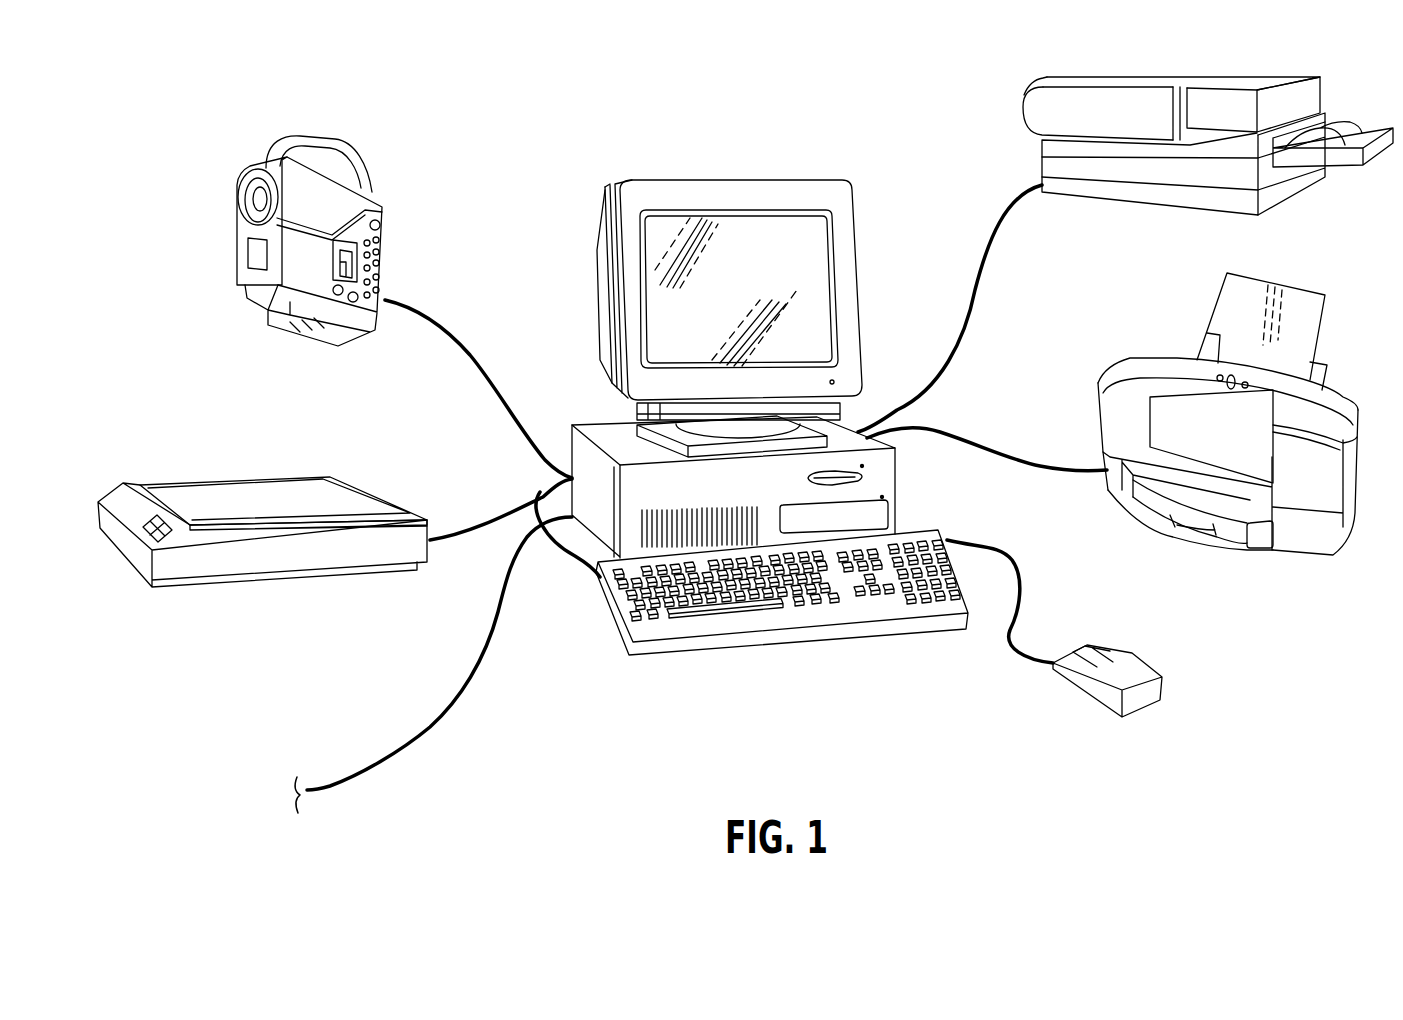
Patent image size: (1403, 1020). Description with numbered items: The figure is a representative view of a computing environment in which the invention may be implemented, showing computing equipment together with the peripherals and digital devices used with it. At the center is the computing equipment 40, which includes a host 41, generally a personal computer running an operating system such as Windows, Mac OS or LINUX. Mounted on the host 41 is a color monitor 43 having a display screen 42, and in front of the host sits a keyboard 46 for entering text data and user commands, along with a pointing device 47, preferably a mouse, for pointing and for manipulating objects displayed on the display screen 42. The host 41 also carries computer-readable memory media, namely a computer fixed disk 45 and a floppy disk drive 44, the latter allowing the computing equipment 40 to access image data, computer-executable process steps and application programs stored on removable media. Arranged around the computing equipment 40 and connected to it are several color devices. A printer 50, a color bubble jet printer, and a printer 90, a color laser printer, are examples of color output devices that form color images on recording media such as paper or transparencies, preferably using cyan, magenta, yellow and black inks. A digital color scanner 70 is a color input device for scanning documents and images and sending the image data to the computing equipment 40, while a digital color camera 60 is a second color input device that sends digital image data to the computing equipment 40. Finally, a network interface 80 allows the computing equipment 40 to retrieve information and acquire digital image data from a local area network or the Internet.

The computing equipment 40 is at (828, 146).
The host 41 is at (586, 412).
The display screen 42 is at (812, 297).
The color monitor 43 is at (730, 178).
The floppy disk drive 44 is at (866, 478).
The computer fixed disk 45 is at (887, 516).
The keyboard 46 is at (713, 627).
The pointing device 47 is at (1140, 702).
The printer 50 is at (1168, 349).
The digital color camera 60 is at (387, 213).
The digital color scanner 70 is at (315, 573).
The network interface 80 is at (388, 821).
The printer 90 is at (1098, 72).